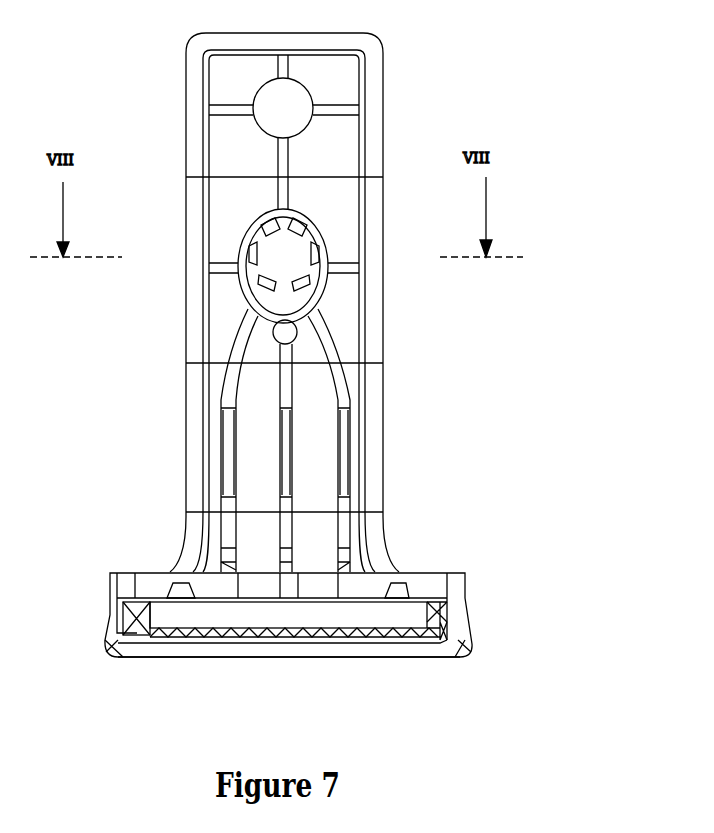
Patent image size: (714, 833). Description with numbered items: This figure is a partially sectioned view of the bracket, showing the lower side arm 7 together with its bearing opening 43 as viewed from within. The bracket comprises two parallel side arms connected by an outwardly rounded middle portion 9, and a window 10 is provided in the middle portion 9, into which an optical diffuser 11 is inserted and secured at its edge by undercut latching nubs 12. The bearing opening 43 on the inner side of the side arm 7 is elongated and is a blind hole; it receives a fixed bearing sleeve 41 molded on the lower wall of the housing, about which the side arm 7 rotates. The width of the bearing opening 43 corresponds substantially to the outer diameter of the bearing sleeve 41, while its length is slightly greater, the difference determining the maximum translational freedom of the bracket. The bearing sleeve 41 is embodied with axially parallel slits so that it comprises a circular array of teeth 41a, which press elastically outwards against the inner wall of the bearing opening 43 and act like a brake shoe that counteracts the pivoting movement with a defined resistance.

The side arm 7 is at (382, 82).
The middle portion 9 is at (105, 623).
The window 10 is at (158, 652).
The optical diffuser 11 is at (397, 630).
The undercut latching nubs 12 is at (180, 587).
The bearing sleeve 41 is at (293, 268).
The teeth 41a is at (245, 250).
The bearing opening 43 is at (308, 300).